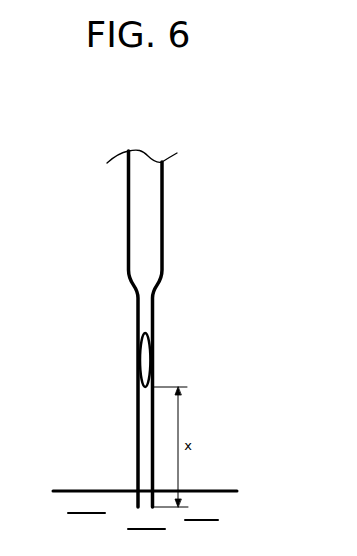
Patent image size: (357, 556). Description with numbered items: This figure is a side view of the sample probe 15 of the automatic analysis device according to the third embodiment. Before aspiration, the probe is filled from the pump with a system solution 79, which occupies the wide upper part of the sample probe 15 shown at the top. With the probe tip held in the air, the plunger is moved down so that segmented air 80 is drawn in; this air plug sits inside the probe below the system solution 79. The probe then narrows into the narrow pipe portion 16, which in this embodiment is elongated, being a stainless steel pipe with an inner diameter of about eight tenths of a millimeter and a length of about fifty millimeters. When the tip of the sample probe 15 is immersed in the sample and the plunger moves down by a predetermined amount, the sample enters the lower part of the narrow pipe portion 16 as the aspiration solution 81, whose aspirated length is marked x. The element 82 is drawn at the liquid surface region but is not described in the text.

The sample probe 15 is at (128, 210).
The system solution 79 is at (148, 237).
The segmented air 80 is at (149, 357).
The narrow pipe portion 16 is at (137, 400).
The aspiration solution 81 is at (138, 443).
The base plate 82 is at (225, 492).